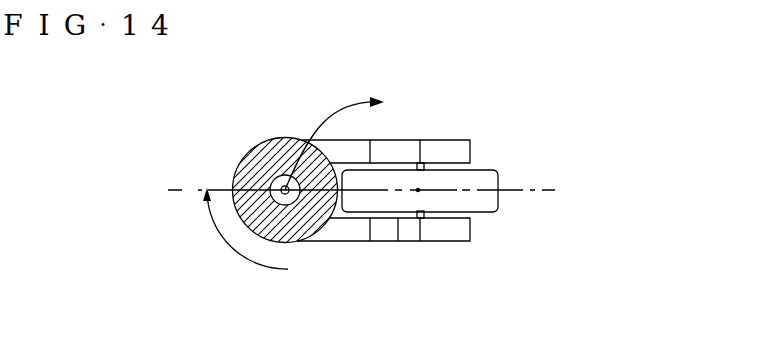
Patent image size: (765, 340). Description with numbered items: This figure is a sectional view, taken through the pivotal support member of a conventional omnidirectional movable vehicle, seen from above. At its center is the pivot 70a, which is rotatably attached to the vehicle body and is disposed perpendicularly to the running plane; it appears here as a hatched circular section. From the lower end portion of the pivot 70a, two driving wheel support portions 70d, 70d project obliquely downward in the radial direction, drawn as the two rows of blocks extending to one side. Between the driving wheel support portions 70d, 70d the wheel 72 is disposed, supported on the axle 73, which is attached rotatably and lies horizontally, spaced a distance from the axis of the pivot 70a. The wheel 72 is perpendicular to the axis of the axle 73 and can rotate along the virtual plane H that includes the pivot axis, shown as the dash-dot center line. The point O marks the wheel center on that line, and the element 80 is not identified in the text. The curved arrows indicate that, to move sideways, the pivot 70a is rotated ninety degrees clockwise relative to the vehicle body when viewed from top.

The virtual plane H is at (190, 186).
The rotary disc 80 is at (251, 152).
The pivot 70a is at (297, 243).
The driving wheel support portions 70d is at (450, 148).
The axle 73 is at (414, 217).
The wheel 72 is at (493, 177).
The center point O is at (418, 190).